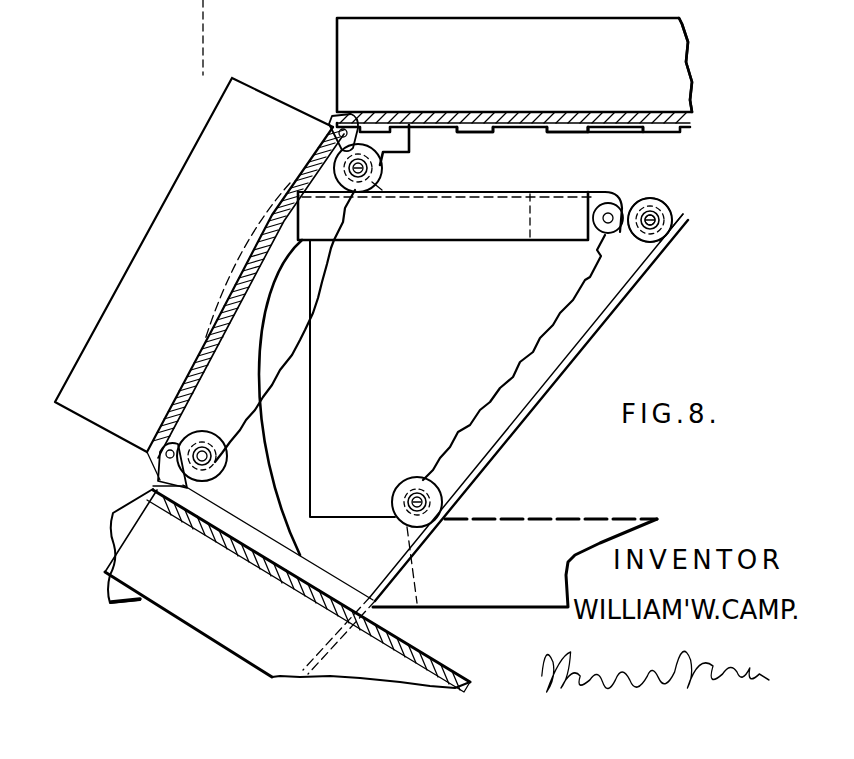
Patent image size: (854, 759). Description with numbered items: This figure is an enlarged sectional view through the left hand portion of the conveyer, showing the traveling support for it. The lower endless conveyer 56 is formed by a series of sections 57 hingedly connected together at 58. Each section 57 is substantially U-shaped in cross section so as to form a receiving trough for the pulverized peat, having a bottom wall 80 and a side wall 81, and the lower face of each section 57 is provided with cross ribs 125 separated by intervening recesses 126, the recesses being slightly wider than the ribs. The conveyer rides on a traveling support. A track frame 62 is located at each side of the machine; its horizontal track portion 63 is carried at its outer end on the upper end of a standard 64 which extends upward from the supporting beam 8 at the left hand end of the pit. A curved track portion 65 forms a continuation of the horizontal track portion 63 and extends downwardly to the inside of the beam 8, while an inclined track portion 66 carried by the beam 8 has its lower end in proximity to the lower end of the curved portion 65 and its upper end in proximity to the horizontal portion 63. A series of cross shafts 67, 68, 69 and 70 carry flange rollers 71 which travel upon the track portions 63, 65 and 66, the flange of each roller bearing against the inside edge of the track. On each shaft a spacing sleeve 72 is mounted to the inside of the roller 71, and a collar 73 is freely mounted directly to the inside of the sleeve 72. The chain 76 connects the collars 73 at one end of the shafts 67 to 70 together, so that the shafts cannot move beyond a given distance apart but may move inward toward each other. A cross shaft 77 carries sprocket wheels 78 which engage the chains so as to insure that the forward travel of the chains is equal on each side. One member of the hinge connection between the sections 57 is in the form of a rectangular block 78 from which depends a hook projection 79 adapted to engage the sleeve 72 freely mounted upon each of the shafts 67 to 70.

The supporting beam 8 is at (110, 543).
The lower endless conveyer 56 is at (673, 100).
The section 57 is at (228, 300).
The hinge connection 58 is at (333, 117).
The track frame 62 is at (287, 405).
The horizontal track portion 63 is at (473, 232).
The standard 64 is at (297, 432).
The curved track portion 65 is at (247, 377).
The inclined track portion 66 is at (503, 432).
The cross shaft 67 is at (664, 213).
The cross shaft 68 is at (385, 172).
The cross shaft 69 is at (213, 460).
The cross shaft 70 is at (423, 503).
The flange roller 71 is at (663, 257).
The spacing sleeve 72 is at (657, 207).
The collar 73 is at (682, 233).
The chain 76 is at (320, 302).
The cross shaft 77 is at (604, 222).
The rectangular block 78 is at (383, 160).
The hook projection 79 is at (380, 160).
The bottom wall 80 is at (623, 120).
The side wall 81 is at (653, 65).
The cross ribs 125 is at (478, 135).
The recesses 126 is at (537, 133).